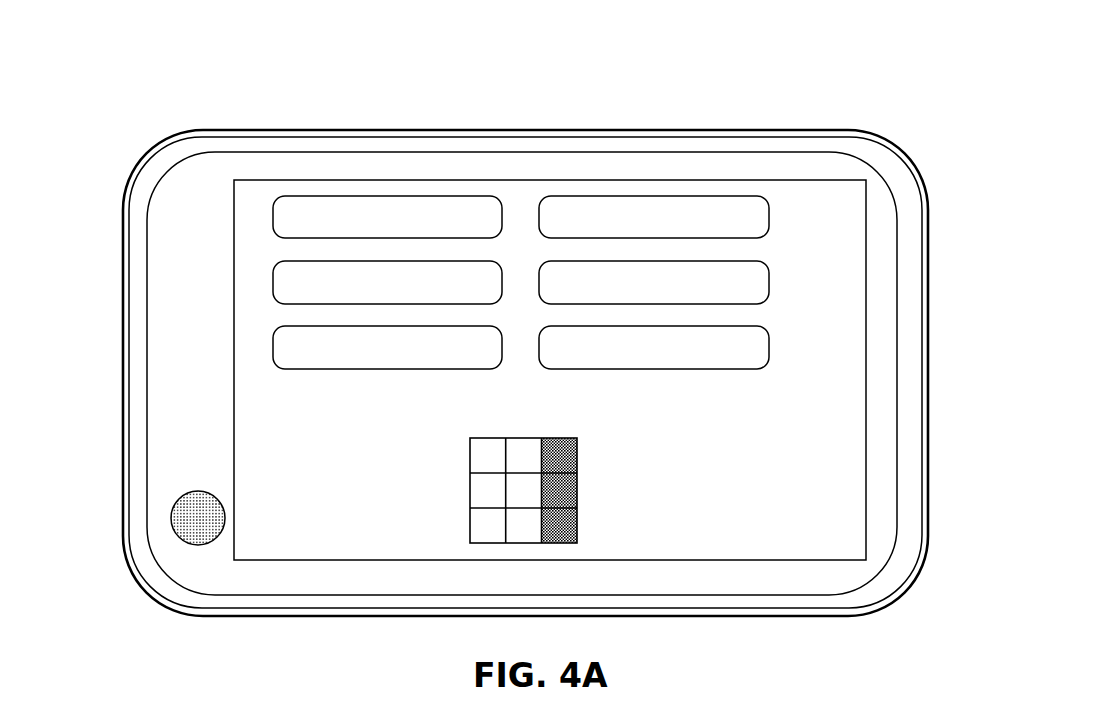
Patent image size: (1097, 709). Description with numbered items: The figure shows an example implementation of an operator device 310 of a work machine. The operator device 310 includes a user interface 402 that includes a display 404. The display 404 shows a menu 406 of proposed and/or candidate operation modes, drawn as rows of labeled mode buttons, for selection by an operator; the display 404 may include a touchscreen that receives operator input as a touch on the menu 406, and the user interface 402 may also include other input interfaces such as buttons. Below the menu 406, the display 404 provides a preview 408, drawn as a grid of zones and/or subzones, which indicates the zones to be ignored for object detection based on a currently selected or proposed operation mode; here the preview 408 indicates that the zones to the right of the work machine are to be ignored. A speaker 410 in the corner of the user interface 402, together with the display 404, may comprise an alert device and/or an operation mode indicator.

The operator device 310 is at (152, 81).
The user interface 402 is at (203, 460).
The display 404 is at (865, 363).
The menu 406 is at (240, 179).
The preview 408 is at (443, 520).
The speaker 410 is at (188, 522).